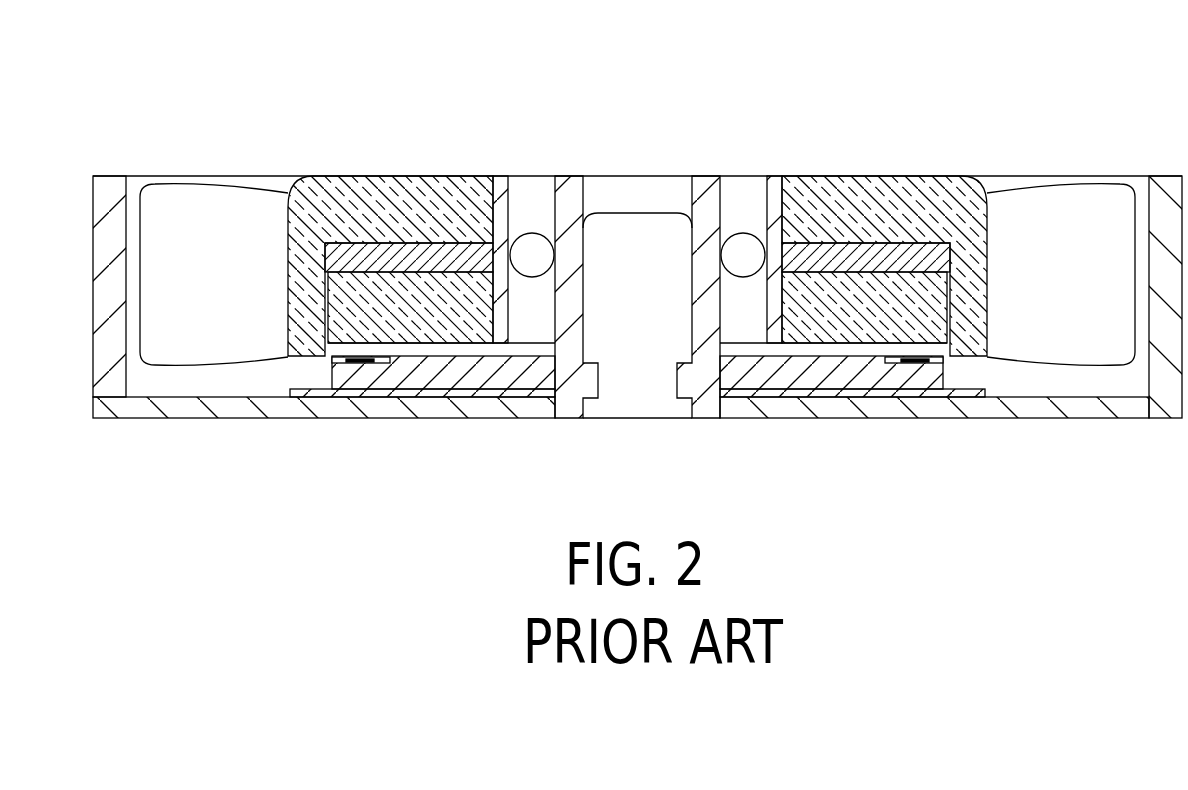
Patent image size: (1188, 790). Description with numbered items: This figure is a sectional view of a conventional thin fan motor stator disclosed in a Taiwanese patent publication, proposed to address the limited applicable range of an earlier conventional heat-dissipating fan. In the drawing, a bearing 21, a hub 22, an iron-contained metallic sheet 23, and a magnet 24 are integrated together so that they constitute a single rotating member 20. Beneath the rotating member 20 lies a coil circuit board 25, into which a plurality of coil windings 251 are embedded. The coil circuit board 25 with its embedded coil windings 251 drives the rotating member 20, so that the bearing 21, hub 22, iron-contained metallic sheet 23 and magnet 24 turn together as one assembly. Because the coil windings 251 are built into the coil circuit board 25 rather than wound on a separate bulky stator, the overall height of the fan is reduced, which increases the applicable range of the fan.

The rotating member 20 is at (728, 104).
The bearing 21 is at (568, 174).
The hub 22 is at (987, 225).
The iron-contained metallic sheet 23 is at (860, 252).
The magnet 24 is at (933, 308).
The coil circuit board 25 is at (495, 383).
The coil windings 251 is at (363, 362).